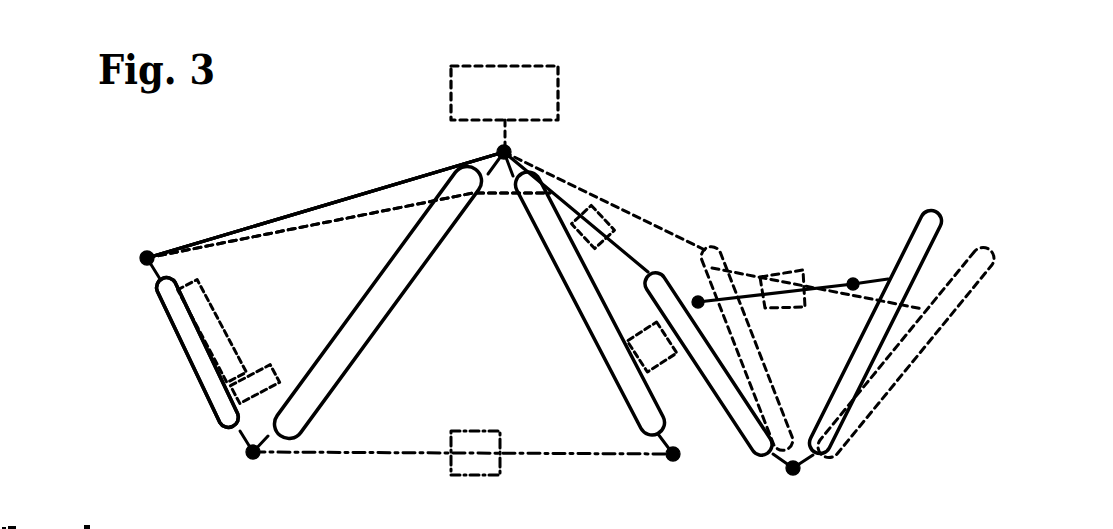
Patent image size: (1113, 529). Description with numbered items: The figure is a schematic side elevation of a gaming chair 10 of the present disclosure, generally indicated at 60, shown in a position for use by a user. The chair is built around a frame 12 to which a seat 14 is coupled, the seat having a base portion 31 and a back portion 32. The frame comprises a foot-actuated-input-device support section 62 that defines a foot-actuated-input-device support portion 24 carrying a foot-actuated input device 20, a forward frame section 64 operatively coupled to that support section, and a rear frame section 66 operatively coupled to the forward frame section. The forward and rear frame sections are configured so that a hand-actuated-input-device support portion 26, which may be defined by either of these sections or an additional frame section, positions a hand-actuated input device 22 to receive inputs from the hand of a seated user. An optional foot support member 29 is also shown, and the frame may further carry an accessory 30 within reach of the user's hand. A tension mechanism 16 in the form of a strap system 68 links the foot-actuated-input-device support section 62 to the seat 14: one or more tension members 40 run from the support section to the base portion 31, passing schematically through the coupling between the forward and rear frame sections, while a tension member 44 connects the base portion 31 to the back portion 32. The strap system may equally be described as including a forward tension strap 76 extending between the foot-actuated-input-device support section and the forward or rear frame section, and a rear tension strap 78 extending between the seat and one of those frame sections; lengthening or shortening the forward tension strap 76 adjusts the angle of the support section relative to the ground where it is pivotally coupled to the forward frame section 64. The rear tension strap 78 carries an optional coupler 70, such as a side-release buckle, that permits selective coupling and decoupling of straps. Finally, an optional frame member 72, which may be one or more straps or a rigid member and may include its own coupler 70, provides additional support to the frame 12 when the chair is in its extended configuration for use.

The gaming chair 10 is at (1003, 91).
The frame 12 is at (705, 164).
The seat 14 is at (990, 248).
The tension mechanism 16 is at (381, 143).
The foot-actuated input device 20 is at (222, 320).
The hand-actuated input device 22 is at (558, 82).
The foot-actuated-input-device support portion 24 is at (196, 312).
The hand-actuated-input-device support portion 26 is at (497, 147).
The foot support member 29 is at (260, 366).
The accessory 30 is at (677, 360).
The base portion of the seat 31 is at (742, 424).
The back portion of the seat 32 is at (900, 252).
The tension member 40 is at (269, 217).
The tension member 44 is at (851, 279).
The gaming chair 60 is at (901, 117).
The foot-actuated-input-device support section 62 is at (190, 368).
The forward frame section 64 is at (400, 312).
The rear frame section 66 is at (573, 305).
The strap system 68 is at (362, 210).
The coupler 70 is at (613, 202).
The frame member 72 is at (360, 451).
The forward tension strap 76 is at (227, 236).
The rear tension strap 78 is at (630, 253).